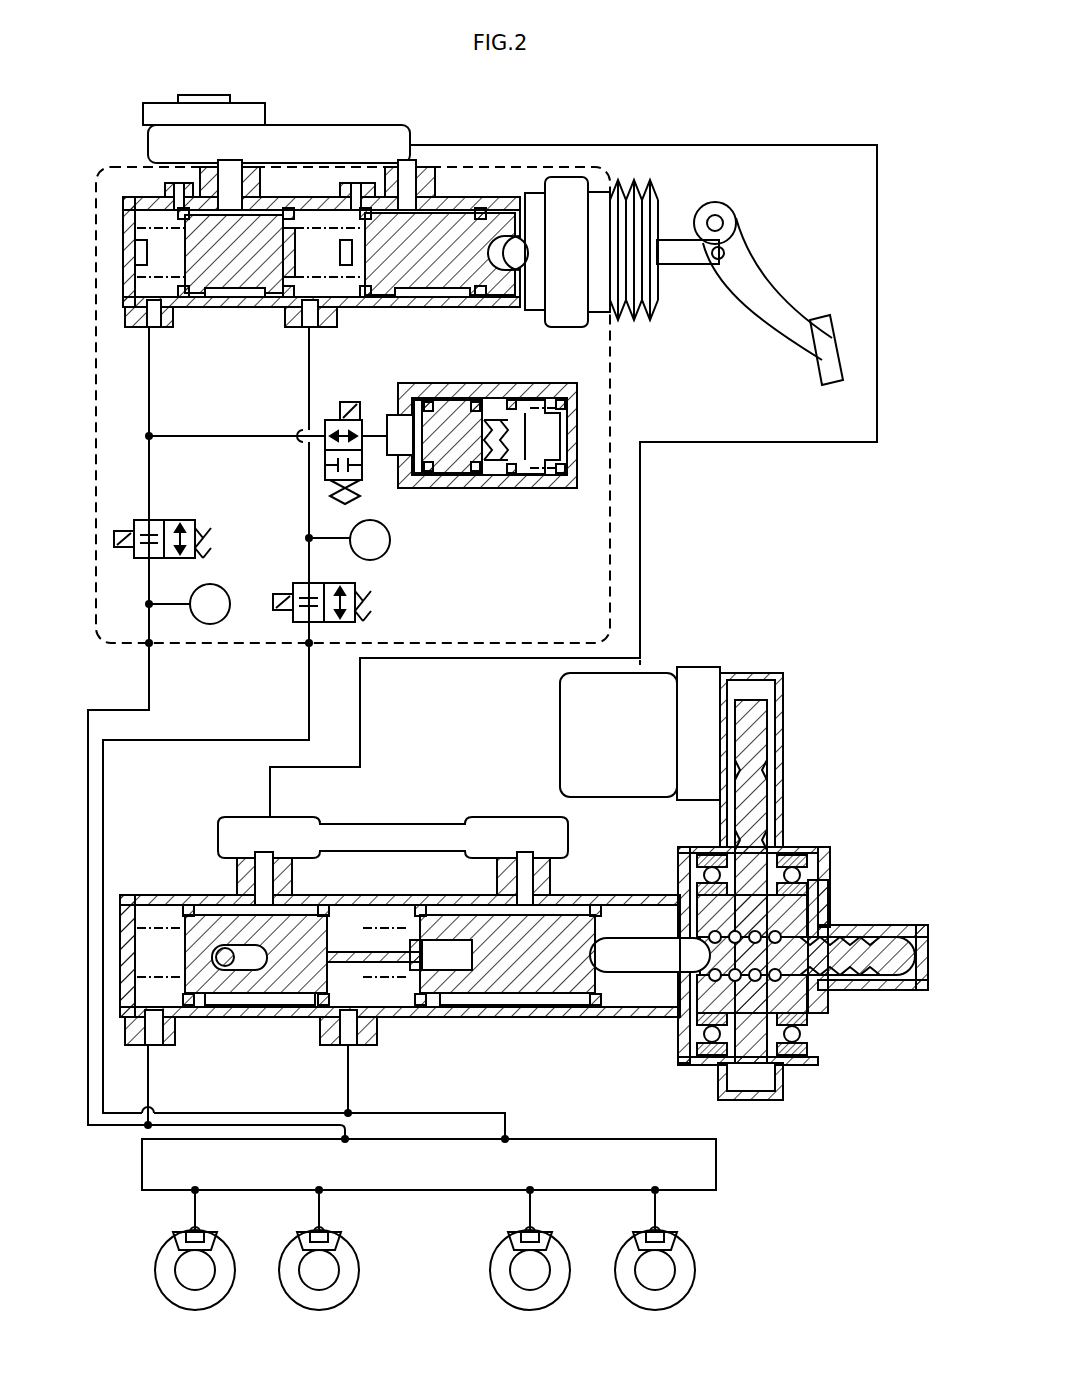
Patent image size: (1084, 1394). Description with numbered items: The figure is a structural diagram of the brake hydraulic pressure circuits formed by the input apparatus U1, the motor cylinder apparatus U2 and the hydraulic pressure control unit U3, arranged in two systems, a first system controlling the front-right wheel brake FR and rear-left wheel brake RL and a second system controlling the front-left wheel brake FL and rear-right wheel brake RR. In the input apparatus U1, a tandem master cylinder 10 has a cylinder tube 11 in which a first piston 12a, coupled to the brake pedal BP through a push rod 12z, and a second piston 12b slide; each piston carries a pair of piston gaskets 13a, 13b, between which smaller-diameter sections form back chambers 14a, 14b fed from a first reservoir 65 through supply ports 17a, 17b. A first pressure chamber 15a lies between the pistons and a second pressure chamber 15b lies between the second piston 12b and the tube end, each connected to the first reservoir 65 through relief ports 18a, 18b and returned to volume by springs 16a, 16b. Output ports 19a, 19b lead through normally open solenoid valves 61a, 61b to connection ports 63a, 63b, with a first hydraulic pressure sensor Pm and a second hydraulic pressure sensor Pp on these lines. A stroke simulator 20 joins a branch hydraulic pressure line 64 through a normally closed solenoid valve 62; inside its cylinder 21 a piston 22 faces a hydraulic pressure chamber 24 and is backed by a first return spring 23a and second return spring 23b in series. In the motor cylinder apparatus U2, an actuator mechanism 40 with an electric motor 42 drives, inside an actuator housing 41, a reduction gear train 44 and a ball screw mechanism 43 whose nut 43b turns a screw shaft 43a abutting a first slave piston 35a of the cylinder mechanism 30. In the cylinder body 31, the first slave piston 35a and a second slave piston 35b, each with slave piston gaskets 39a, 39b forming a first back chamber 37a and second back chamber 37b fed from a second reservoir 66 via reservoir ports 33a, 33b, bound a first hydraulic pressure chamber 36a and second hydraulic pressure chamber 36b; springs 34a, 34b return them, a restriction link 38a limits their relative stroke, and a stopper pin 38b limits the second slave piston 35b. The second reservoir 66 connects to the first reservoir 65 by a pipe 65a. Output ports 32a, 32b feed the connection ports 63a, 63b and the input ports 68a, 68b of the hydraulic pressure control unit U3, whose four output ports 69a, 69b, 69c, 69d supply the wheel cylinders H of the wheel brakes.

The master cylinder 10 is at (468, 188).
The cylinder tube 11 is at (497, 200).
The first piston 12a is at (430, 240).
The second piston 12b is at (250, 260).
The push rod 12z is at (518, 252).
The piston gasket 13a is at (260, 298).
The piston gasket 13b is at (186, 298).
The back chamber 14a is at (432, 294).
The back chamber 14b is at (250, 296).
The first pressure chamber 15a is at (325, 245).
The second pressure chamber 15b is at (152, 242).
The spring 16a is at (347, 240).
The spring 16b is at (122, 280).
The supply port 17a is at (410, 185).
The supply port 17b is at (240, 185).
The relief port 18a is at (358, 196).
The relief port 18b is at (180, 196).
The output port 19a is at (313, 322).
The output port 19b is at (156, 320).
The stroke simulator 20 is at (530, 376).
The cylinder 21 is at (452, 385).
The piston 22 is at (450, 445).
The first return spring 23a is at (510, 476).
The second return spring 23b is at (494, 460).
The hydraulic pressure chamber 24 is at (416, 470).
The cylinder mechanism 30 is at (592, 873).
The cylinder body 31 is at (628, 895).
The output port 32a is at (353, 1035).
The output port 32b is at (155, 1038).
The reservoir port 33a is at (512, 885).
The reservoir port 33b is at (248, 885).
The spring 34a is at (416, 938).
The spring 34b is at (127, 912).
The first slave piston 35a is at (552, 982).
The second slave piston 35b is at (296, 970).
The first hydraulic pressure chamber 36a is at (378, 942).
The second hydraulic pressure chamber 36b is at (162, 945).
The first back chamber 37a is at (505, 1005).
The second back chamber 37b is at (258, 1005).
The restriction link 38a is at (355, 950).
The stopper pin 38b is at (226, 968).
The slave piston gasket 39a is at (326, 1008).
The slave piston gasket 39b is at (190, 1008).
The actuator mechanism 40 is at (838, 852).
The actuator housing 41 is at (822, 890).
The electric motor 42 is at (560, 718).
The ball screw mechanism 43 is at (888, 938).
The screw shaft 43a is at (665, 965).
The nut 43b is at (828, 995).
The reduction gear train 44 is at (770, 785).
The normally open solenoid valve 61a is at (300, 583).
The normally open solenoid valve 61b is at (185, 518).
The normally closed solenoid valve 62 is at (357, 418).
The connection port 63a is at (305, 648).
The connection port 63b is at (150, 655).
The branch hydraulic pressure line 64 is at (150, 410).
The first reservoir 65 is at (148, 136).
The pipe 65a is at (641, 527).
The second reservoir 66 is at (428, 825).
The input port 68a is at (508, 1136).
The input port 68b is at (350, 1130).
The output port 69a is at (665, 1208).
The output port 69b is at (540, 1208).
The output port 69c is at (330, 1208).
The output port 69d is at (205, 1208).
The brake pedal BP is at (820, 322).
The input apparatus U1 is at (612, 378).
The motor cylinder apparatus U2 is at (802, 640).
The hydraulic pressure control unit U3 is at (718, 1165).
The first hydraulic pressure sensor Pm is at (347, 540).
The second hydraulic pressure sensor Pp is at (187, 604).
The wheel cylinder H is at (218, 1236).
The front-left wheel brake FL is at (232, 1278).
The rear-right wheel brake RR is at (356, 1278).
The rear-left wheel brake RL is at (567, 1278).
The front-right wheel brake FR is at (692, 1278).